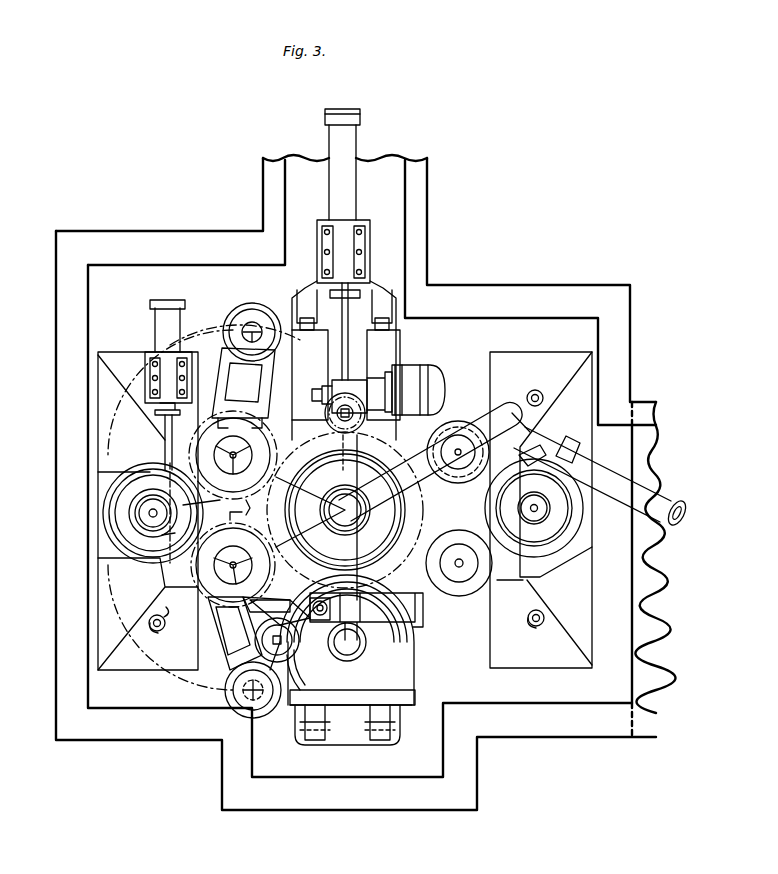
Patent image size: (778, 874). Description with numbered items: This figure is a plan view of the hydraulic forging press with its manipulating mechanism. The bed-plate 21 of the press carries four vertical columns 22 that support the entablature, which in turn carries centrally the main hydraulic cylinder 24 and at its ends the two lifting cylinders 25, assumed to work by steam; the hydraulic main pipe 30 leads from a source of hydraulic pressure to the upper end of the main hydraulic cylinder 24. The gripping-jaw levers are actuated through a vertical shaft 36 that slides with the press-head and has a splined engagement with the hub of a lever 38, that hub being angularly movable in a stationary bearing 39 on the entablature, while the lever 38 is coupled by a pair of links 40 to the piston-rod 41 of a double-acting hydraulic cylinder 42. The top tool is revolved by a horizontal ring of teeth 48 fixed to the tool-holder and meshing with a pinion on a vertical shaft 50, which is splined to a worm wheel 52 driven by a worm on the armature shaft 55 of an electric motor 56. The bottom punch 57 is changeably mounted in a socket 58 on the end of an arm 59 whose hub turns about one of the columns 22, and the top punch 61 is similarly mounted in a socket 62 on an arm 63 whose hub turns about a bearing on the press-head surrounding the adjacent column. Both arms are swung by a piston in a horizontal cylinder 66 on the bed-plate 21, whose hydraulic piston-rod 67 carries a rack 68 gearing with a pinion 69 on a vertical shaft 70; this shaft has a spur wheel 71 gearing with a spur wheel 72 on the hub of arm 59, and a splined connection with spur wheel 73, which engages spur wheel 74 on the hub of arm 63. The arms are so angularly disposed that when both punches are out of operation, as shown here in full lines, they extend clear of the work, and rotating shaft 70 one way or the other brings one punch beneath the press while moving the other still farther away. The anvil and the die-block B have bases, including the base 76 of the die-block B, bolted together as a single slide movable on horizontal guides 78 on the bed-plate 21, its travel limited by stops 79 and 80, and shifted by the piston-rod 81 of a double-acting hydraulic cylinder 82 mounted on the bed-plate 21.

The bed-plate 21 is at (312, 283).
The vertical columns 22 is at (470, 604).
The main hydraulic cylinder 24 is at (406, 517).
The lifting cylinders 25 is at (104, 515).
The hydraulic main pipe 30 is at (418, 455).
The vertical shaft 36 is at (228, 645).
The lever 38 is at (268, 607).
The stationary bearing 39 is at (292, 644).
The links 40 is at (320, 615).
The piston-rod 41 is at (356, 565).
The double-acting hydraulic cylinder 42 is at (415, 614).
The ring of teeth 48 is at (418, 495).
The vertical shaft 50 is at (365, 413).
The worm wheel 52 is at (332, 412).
The armature shaft 55 is at (312, 397).
The electric motor 56 is at (418, 386).
The bottom punch 57 is at (246, 325).
The socket 58 is at (257, 312).
The arm 59 is at (222, 374).
The top punch 61 is at (258, 708).
The socket 62 is at (236, 714).
The arm 63 is at (228, 638).
The horizontal cylinder 66 is at (154, 327).
The hydraulic piston-rod 67 is at (173, 428).
The rack 68 is at (160, 503).
The pinion 69 is at (211, 502).
The vertical shaft 70 is at (162, 535).
The spur wheel 71 is at (258, 506).
The spur wheel 72 is at (276, 445).
The spur wheel 73 is at (250, 520).
The spur wheel 74 is at (276, 582).
The base of the die-block 76 is at (400, 695).
The horizontal guides 78 is at (292, 379).
The stops 79 is at (305, 320).
The stops 80 is at (298, 728).
The piston-rod 81 is at (348, 320).
The double-acting hydraulic cylinder 82 is at (357, 190).
The die-block B is at (402, 648).